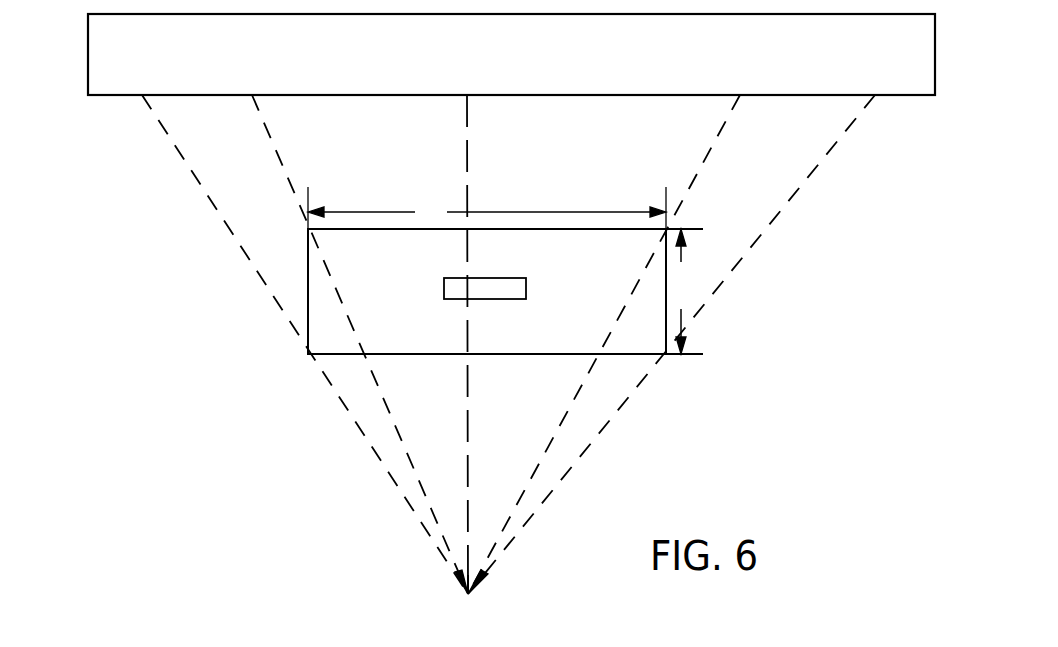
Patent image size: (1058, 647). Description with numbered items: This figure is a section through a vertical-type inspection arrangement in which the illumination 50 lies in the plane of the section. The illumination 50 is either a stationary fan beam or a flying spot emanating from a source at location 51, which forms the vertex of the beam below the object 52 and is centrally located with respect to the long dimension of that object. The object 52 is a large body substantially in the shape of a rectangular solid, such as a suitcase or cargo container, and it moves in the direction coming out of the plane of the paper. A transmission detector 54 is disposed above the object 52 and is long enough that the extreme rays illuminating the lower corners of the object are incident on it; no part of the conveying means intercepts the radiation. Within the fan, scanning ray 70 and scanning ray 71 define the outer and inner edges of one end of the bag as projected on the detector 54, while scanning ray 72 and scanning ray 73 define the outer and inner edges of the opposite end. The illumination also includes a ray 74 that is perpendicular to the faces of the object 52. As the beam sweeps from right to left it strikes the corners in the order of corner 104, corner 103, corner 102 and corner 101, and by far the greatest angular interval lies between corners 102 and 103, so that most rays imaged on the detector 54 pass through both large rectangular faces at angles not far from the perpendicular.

The transmission detector 54 is at (914, 85).
The object 52 is at (592, 246).
The source location 51 is at (468, 594).
The illumination 50 is at (508, 344).
The scanning ray 70 is at (592, 447).
The scanning ray 71 is at (590, 373).
The scanning ray 72 is at (350, 415).
The scanning ray 73 is at (392, 416).
The perpendicular ray 74 is at (468, 372).
The object corner 101 is at (308, 354).
The object corner 102 is at (308, 229).
The object corner 103 is at (666, 229).
The object corner 104 is at (666, 354).